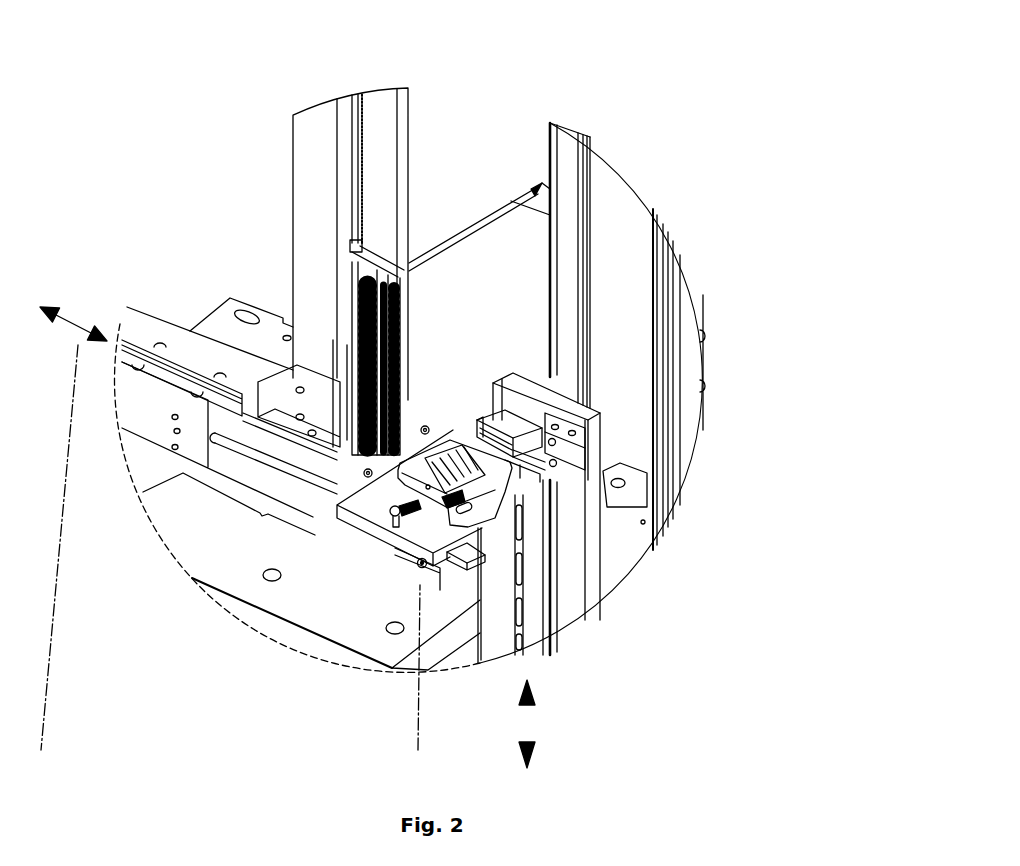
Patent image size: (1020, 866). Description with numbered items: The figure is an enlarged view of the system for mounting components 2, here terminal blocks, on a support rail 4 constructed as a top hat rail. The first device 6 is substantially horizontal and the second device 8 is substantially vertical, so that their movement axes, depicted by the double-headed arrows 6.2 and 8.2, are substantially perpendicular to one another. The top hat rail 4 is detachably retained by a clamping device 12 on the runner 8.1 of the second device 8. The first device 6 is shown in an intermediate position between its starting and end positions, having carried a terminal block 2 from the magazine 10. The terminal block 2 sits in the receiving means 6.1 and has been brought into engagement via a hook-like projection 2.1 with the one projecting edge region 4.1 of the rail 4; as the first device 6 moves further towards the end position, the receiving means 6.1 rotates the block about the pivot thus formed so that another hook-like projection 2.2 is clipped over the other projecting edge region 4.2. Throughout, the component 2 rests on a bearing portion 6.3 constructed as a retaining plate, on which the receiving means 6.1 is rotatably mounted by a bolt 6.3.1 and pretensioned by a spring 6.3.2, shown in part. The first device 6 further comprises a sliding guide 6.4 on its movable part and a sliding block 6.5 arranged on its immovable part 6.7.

The component 2 is at (377, 228).
The hook-like projection 2.1 is at (413, 262).
The holder 2.2 is at (347, 243).
The support rail 4 is at (552, 626).
The projecting edge region 4.1 is at (482, 400).
The other projecting edge region 4.2 is at (532, 558).
The first device 6 is at (143, 322).
The receiving means 6.1 is at (345, 548).
The double-headed arrow 6.2 is at (67, 545).
The bearing portion 6.3 is at (400, 478).
The bolt 6.3.1 is at (437, 482).
The spring 6.3.2 is at (414, 522).
The sliding guide 6.4 is at (461, 575).
The sliding block 6.5 is at (319, 598).
The immovable part 6.7 is at (235, 482).
The second device 8 is at (617, 215).
The runner 8.1 is at (588, 447).
The double-headed arrow 8.2 is at (524, 714).
The magazine 10 is at (313, 340).
The clamping device 12 is at (552, 475).